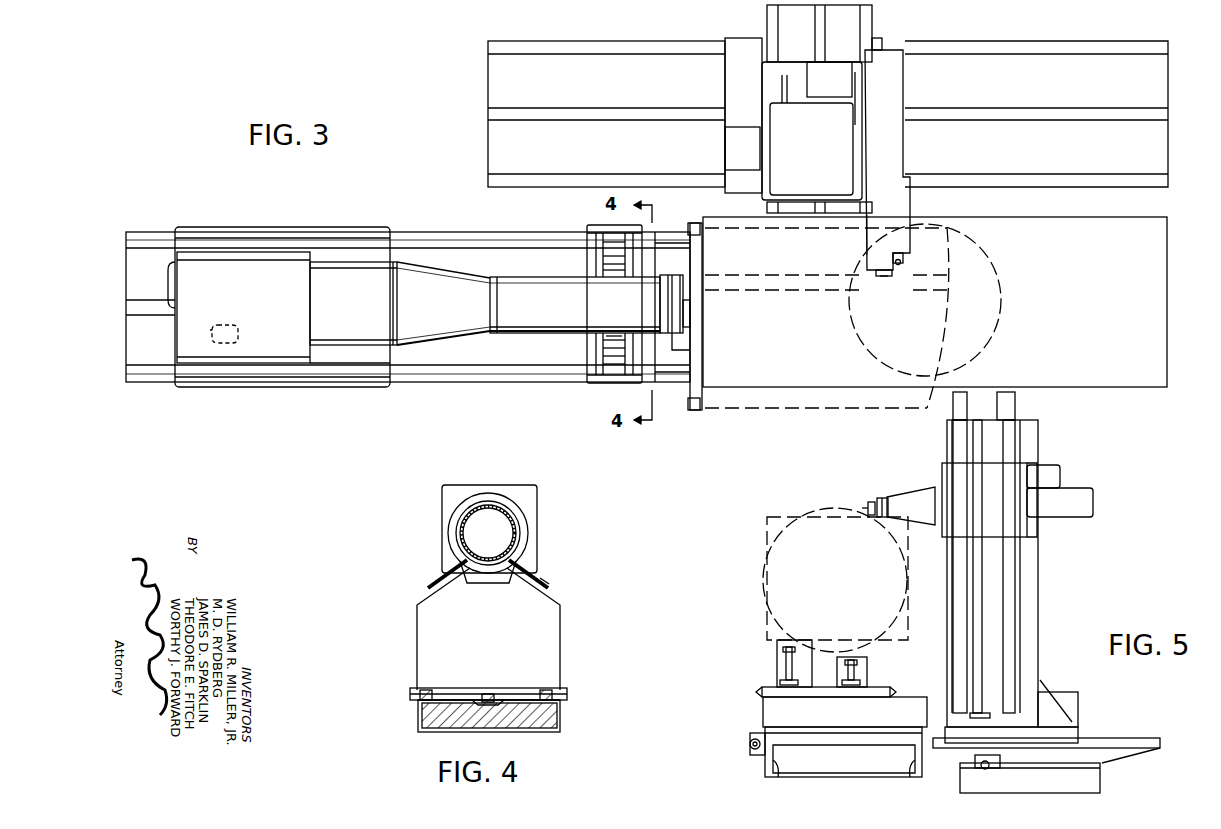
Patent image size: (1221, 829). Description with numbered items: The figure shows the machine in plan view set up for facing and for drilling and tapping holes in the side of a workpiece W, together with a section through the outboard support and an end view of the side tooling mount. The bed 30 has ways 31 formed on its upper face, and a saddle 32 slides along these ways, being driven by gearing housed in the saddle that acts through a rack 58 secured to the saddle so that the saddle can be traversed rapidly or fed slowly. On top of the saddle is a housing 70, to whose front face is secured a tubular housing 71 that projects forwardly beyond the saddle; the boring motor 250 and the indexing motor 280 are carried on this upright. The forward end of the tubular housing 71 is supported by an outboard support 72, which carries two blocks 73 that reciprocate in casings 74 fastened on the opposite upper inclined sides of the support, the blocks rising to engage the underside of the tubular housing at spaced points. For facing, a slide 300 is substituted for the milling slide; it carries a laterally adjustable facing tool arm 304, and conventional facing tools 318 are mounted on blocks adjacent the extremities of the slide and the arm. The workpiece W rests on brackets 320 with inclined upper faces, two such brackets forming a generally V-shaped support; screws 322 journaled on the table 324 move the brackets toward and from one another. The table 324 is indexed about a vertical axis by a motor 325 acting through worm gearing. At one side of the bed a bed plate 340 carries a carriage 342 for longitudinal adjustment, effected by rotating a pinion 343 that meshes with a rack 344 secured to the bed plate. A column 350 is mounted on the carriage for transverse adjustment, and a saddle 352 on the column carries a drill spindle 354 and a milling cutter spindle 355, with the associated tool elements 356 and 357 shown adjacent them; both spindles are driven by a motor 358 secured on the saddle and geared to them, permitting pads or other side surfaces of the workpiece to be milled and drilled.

In FIG. 3, the bed 30 is at (512, 242).
In FIG. 4, the bed 30 is at (545, 730).
In FIG. 5, the bed 30 is at (830, 770).
In FIG. 3, the ways 31 is at (432, 238).
In FIG. 4, the ways 31 is at (562, 690).
In FIG. 3, the saddle 32 is at (352, 378).
In FIG. 4, the rack 58 is at (492, 692).
In FIG. 3, the housing 70 is at (278, 262).
In FIG. 4, the housing 70 is at (537, 490).
In FIG. 3, the tubular housing 71 is at (522, 281).
In FIG. 4, the tubular housing 71 is at (515, 520).
In FIG. 3, the outboard support 72 is at (590, 268).
In FIG. 4, the outboard support 72 is at (561, 636).
In FIG. 3, the blocks 73 is at (612, 282).
In FIG. 4, the blocks 73 is at (458, 556).
In FIG. 3, the casings 74 is at (603, 354).
In FIG. 4, the casings 74 is at (546, 582).
In FIG. 3, the motor 250 is at (176, 284).
In FIG. 3, the motor 280 is at (228, 346).
In FIG. 3, the slide 300 is at (690, 405).
In FIG. 3, the facing tool arm 304 is at (690, 258).
In FIG. 3, the facing tools 318 is at (697, 224).
In FIG. 5, the rests or brackets 320 is at (777, 667).
In FIG. 5, the screws 322 is at (758, 692).
In FIG. 3, the table 324 is at (1122, 385).
In FIG. 5, the table 324 is at (763, 715).
In FIG. 5, the motor 325 is at (752, 750).
In FIG. 3, the bed plate 340 is at (1040, 60).
In FIG. 5, the bed plate 340 is at (1100, 776).
In FIG. 3, the carriage 342 is at (725, 72).
In FIG. 5, the carriage 342 is at (1140, 738).
In FIG. 5, the pinion 343 is at (996, 766).
In FIG. 5, the rack 344 is at (983, 770).
In FIG. 3, the column 350 is at (858, 32).
In FIG. 5, the column 350 is at (1038, 645).
In FIG. 3, the saddle 352 is at (905, 160).
In FIG. 5, the saddle 352 is at (1030, 527).
In FIG. 3, the drill spindle 354 is at (902, 258).
In FIG. 5, the drill spindle 354 is at (884, 498).
In FIG. 3, the milling cutter spindle 355 is at (878, 273).
In FIG. 5, the milling cutter spindle 355 is at (872, 501).
In FIG. 3, the tool pivot 356 is at (900, 265).
In FIG. 3, the tool tip 357 is at (885, 279).
In FIG. 5, the tool tip 357 is at (866, 506).
In FIG. 5, the motor 358 is at (1062, 470).
In FIG. 3, the workpiece W is at (812, 409).
In FIG. 5, the workpiece W is at (812, 508).